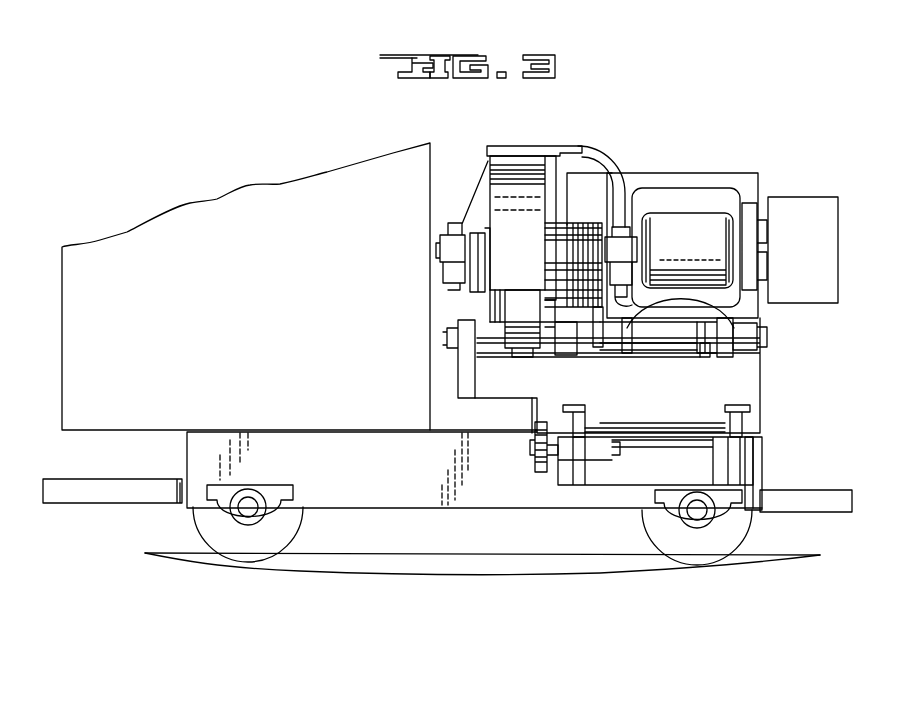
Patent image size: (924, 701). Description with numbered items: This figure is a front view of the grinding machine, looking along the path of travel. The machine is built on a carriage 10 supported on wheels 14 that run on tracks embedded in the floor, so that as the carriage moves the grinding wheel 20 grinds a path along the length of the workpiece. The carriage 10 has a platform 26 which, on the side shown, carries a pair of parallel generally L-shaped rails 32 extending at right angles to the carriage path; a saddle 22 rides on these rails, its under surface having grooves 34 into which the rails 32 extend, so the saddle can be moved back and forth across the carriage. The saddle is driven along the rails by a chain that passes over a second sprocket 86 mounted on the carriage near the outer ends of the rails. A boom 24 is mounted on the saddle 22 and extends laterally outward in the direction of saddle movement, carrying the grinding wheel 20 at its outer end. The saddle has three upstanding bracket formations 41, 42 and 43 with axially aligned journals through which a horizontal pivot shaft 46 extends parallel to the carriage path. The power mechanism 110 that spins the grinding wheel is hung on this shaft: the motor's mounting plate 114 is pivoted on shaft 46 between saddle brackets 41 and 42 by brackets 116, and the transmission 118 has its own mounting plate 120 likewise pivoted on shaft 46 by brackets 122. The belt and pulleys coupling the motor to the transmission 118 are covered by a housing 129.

The carriage 10 is at (112, 462).
The wheel 14 is at (292, 531).
The grinding wheel 20 is at (512, 348).
The saddle 22 is at (762, 383).
The boom 24 is at (483, 224).
The platform 26 is at (432, 431).
The rails 32 is at (733, 425).
The grooves 34 is at (581, 407).
The bracket formation 41 is at (752, 340).
The bracket formation 42 is at (568, 333).
The bracket formation 43 is at (468, 340).
The pivot shaft 46 is at (655, 345).
The second sprocket 86 is at (537, 460).
The power mechanism 110 is at (716, 173).
The mounting plate 114 is at (637, 180).
The brackets 116 is at (597, 355).
The transmission 118 is at (687, 250).
The mounting plate 120 is at (686, 247).
The brackets 122 is at (731, 318).
The housing 129 is at (808, 208).